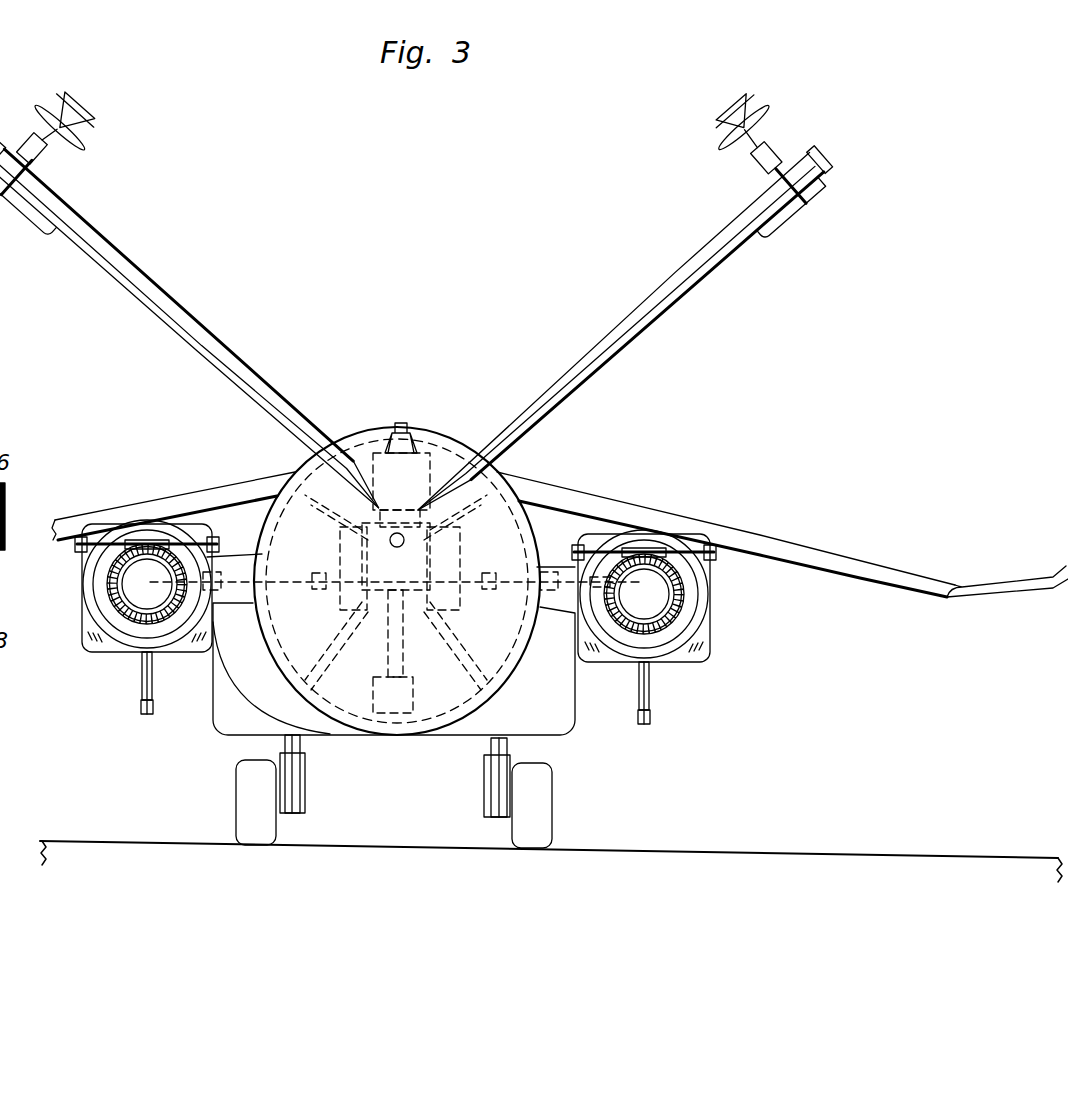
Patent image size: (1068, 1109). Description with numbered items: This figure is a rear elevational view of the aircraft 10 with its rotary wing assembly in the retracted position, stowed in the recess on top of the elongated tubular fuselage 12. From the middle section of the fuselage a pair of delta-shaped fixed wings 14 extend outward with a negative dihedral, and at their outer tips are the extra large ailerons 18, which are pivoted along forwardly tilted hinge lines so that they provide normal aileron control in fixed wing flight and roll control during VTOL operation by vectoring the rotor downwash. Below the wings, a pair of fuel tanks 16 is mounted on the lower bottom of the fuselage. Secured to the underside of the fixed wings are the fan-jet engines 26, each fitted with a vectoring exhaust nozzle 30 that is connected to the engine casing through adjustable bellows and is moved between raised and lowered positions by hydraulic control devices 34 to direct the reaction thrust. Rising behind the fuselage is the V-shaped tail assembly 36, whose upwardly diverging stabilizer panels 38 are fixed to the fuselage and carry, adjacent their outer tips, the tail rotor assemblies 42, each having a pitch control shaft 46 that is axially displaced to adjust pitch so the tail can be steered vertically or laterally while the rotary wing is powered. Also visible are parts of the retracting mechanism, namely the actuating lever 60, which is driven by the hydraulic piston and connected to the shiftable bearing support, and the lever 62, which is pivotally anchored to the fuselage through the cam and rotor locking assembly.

The aircraft 10 is at (443, 254).
The fuselage 12 is at (522, 658).
The fixed wings 14 is at (797, 548).
The fuel tanks 16 is at (235, 703).
The ailerons 18 is at (1000, 586).
The fan-jet engines 26 is at (695, 664).
The exhaust nozzles 30 is at (683, 600).
The hydraulic control devices 34 is at (655, 677).
The tail assembly 36 is at (137, 143).
The stabilizer panels 38 is at (213, 338).
The tail rotor assemblies 42 is at (36, 100).
The pitch control shaft 46 is at (68, 105).
The actuating lever 60 is at (13, 536).
The lever 62 is at (9, 609).